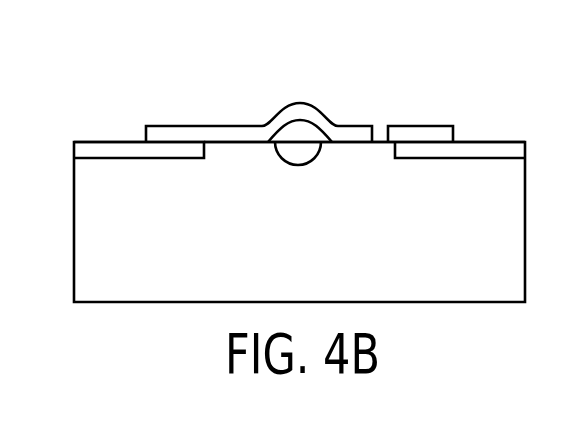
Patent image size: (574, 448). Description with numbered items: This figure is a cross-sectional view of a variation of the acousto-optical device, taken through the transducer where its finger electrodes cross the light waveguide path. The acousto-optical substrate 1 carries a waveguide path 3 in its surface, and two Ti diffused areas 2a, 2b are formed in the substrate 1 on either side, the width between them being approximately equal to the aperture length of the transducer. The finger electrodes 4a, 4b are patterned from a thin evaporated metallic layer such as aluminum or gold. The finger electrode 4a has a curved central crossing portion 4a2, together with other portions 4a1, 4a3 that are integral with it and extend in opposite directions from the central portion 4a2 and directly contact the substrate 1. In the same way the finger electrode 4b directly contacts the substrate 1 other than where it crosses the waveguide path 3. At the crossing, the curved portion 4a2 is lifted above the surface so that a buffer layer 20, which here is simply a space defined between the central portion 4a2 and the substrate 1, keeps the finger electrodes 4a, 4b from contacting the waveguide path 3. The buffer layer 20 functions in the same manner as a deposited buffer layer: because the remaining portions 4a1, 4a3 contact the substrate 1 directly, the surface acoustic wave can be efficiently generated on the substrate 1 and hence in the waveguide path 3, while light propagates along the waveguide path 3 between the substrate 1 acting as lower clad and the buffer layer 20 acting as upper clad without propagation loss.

The substrate 1 is at (525, 213).
The Ti diffused area 2a is at (98, 147).
The Ti diffused area 2b is at (515, 146).
The waveguide path 3 is at (300, 157).
The finger electrode 4a is at (266, 95).
The portion of finger electrode 4a1 is at (220, 132).
The central crossing portion 4a2 is at (300, 110).
The portion of finger electrode 4a3 is at (357, 130).
The finger electrode 4b is at (420, 122).
The buffer layer 20 is at (303, 130).